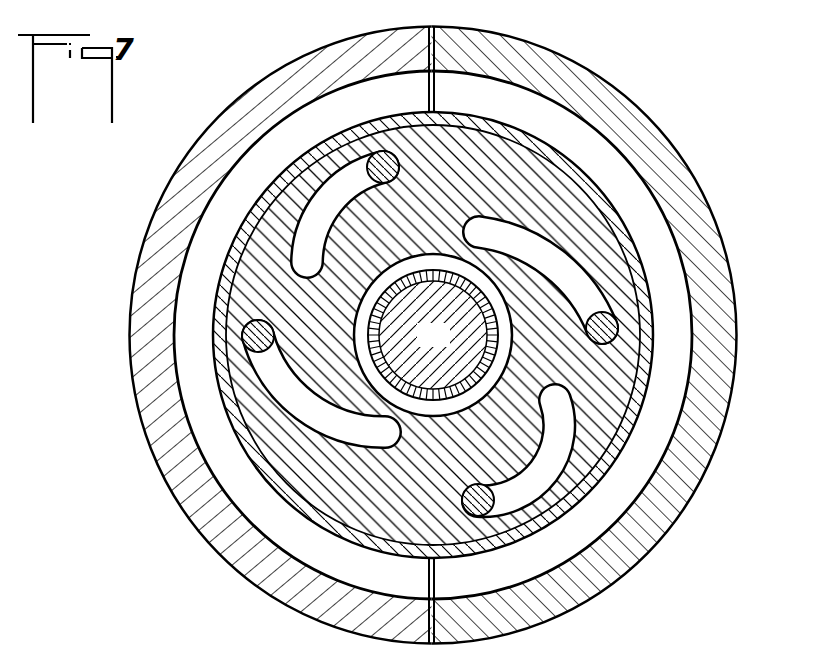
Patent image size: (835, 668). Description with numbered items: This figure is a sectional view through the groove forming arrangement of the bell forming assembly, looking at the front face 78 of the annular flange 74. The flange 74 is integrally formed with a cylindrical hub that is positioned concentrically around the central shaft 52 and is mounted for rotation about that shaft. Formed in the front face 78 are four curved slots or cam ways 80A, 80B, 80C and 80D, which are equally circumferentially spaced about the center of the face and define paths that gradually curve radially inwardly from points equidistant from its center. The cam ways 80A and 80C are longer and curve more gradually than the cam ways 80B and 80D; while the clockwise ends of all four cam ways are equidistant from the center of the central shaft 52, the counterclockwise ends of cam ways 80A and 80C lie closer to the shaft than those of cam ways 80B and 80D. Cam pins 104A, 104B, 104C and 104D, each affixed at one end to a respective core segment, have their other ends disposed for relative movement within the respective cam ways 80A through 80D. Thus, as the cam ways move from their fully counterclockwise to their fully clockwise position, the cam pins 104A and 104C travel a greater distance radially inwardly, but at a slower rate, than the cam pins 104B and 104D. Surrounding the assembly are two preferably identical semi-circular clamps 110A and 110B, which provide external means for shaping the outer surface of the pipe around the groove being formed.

The central shaft 52 is at (447, 346).
The annular flange 74 is at (647, 356).
The front face 78 is at (610, 245).
The cam way 80A is at (290, 408).
The cam way 80B is at (523, 462).
The cam way 80C is at (552, 278).
The cam way 80D is at (332, 210).
The cam pin 104A is at (270, 303).
The cam pin 104B is at (462, 500).
The cam pin 104C is at (603, 344).
The cam pin 104D is at (400, 170).
The semi-circular clamp 110A is at (668, 157).
The semi-circular clamp 110B is at (222, 120).